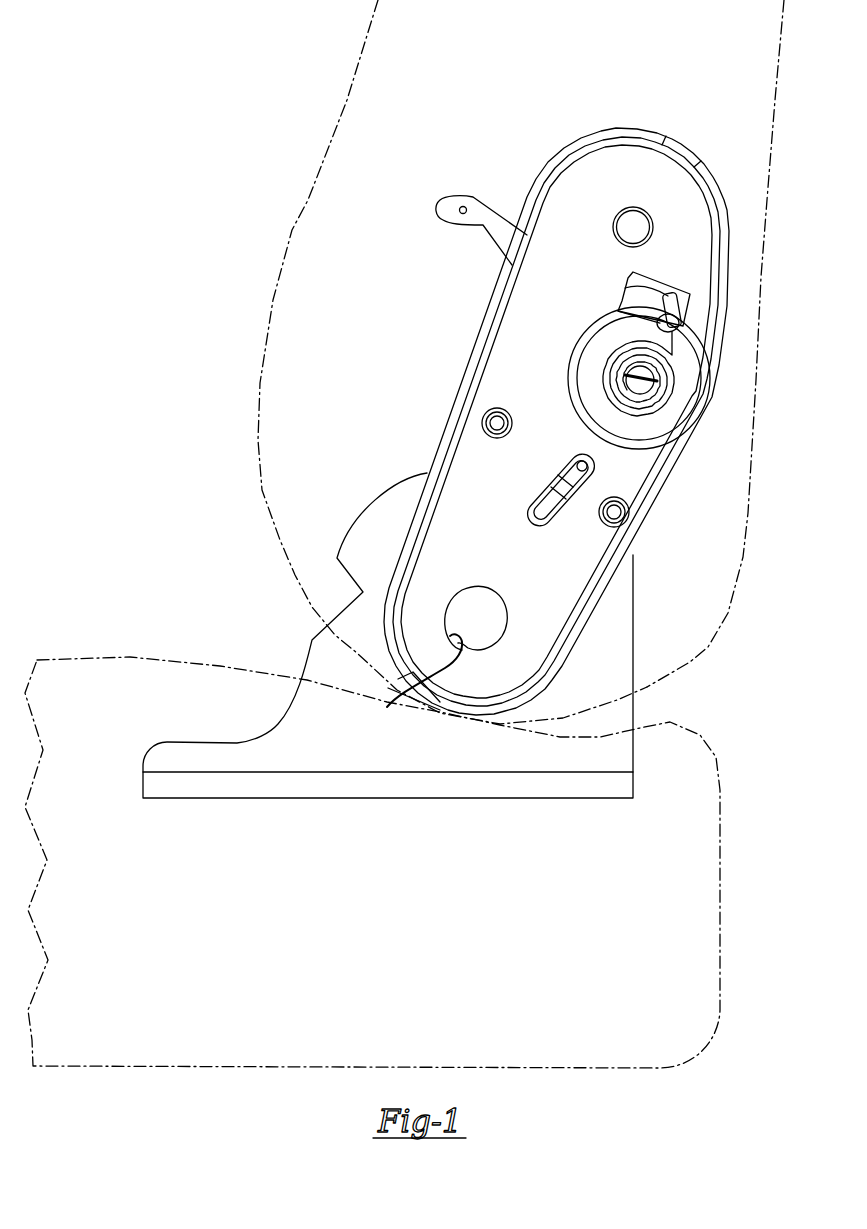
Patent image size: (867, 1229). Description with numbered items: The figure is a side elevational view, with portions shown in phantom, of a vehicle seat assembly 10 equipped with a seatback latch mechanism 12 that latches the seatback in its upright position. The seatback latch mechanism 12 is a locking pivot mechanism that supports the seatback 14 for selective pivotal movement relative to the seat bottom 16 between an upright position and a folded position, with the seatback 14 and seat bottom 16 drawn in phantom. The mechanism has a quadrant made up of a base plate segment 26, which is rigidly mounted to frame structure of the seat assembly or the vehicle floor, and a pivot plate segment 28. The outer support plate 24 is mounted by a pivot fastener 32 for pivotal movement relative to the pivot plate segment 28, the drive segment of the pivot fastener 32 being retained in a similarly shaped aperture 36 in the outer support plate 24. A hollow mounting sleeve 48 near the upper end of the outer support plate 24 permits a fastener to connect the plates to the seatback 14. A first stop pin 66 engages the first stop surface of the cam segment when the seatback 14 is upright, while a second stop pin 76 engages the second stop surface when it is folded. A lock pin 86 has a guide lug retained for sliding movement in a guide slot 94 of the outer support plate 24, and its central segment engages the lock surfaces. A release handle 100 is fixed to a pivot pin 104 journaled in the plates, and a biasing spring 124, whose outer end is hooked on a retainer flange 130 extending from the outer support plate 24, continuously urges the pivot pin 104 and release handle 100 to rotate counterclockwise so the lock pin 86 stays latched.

The vehicle seat assembly 10 is at (252, 385).
The seatback latch mechanism 12 is at (466, 368).
The seatback 14 is at (288, 224).
The seat bottom 16 is at (137, 657).
The outer support plate 24 is at (608, 128).
The base plate segment 26 is at (266, 728).
The pivot plate segment 28 is at (618, 645).
The pivot fastener 32 is at (486, 608).
The aperture 36 is at (387, 707).
The hollow mounting sleeve 48 is at (633, 227).
The first stop pin 66 is at (614, 512).
The second stop pin 76 is at (497, 423).
The lock pin 86 is at (560, 500).
The guide slot 94 is at (585, 468).
The release handle 100 is at (505, 228).
The pivot pin 104 is at (640, 382).
The biasing spring 124 is at (680, 352).
The retainer flange 130 is at (678, 315).